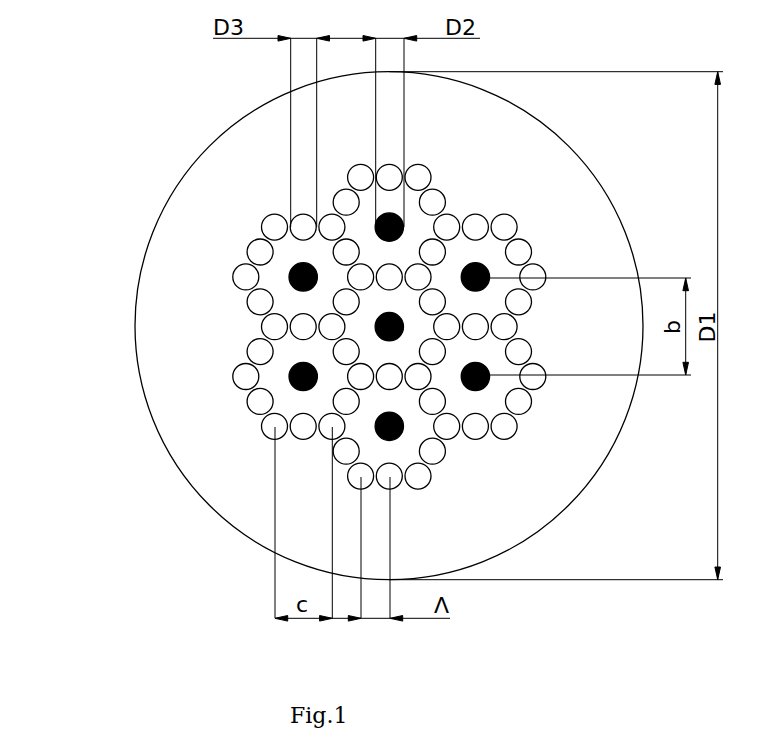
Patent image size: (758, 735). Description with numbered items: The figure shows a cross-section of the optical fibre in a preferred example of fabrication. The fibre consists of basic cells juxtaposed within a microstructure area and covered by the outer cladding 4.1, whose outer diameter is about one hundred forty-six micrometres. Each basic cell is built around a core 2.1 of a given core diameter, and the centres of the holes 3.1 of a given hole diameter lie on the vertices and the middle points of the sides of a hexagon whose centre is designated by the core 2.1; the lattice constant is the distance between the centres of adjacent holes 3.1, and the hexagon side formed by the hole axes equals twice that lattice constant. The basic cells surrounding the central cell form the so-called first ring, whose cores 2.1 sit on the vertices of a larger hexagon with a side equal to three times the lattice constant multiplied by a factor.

The core 2.1 is at (303, 306).
The hole 3.1 is at (309, 326).
The cladding 4.1 is at (330, 326).